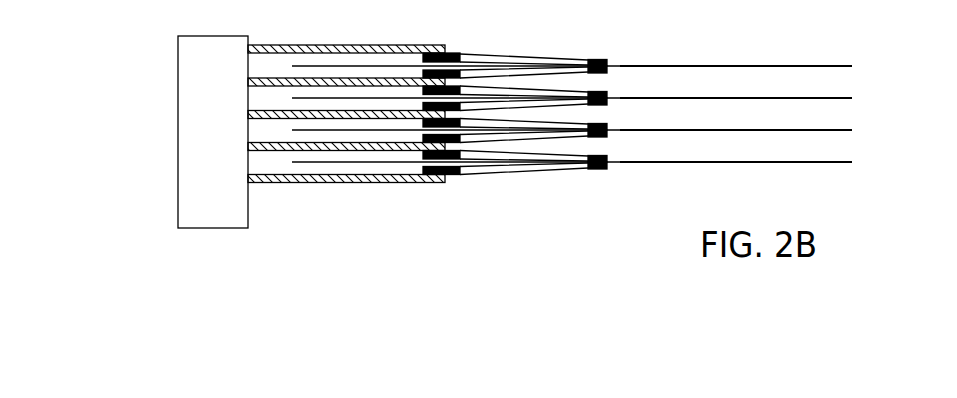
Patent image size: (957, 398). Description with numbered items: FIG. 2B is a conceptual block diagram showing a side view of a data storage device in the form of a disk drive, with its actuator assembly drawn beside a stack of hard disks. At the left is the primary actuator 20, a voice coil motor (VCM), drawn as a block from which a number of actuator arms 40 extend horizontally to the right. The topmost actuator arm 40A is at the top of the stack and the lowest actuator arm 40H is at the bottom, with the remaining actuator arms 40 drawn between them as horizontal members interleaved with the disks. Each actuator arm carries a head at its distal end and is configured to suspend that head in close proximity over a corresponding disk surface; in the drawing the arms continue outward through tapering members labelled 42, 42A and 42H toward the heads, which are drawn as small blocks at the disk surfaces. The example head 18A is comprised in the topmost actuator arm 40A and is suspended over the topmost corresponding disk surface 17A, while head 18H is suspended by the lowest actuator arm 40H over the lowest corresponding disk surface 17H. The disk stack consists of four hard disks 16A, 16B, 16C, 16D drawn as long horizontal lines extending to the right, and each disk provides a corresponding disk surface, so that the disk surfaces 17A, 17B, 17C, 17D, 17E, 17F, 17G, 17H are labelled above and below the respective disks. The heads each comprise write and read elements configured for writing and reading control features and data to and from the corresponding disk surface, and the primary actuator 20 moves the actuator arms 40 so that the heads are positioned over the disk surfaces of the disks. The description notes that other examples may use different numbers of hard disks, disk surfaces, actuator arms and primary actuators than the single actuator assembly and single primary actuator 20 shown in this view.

The primary actuator 20 is at (178, 74).
The actuator arms 40 is at (346, 134).
The topmost actuator arm 40A is at (367, 45).
The lowest actuator arm 40H is at (313, 183).
The suspensions 42 is at (520, 135).
The suspension A 42A is at (546, 36).
The suspension H 42H is at (542, 185).
The head 18A is at (614, 53).
The head 18H is at (614, 176).
The hard disk 16A is at (860, 66).
The hard disk 16B is at (860, 98).
The hard disk 16C is at (860, 130).
The hard disk 16D is at (860, 162).
The topmost disk surface 17A is at (764, 66).
The disk surface 17B is at (748, 66).
The disk surface 17C is at (764, 98).
The disk surface 17D is at (748, 98).
The disk surface 17E is at (751, 130).
The disk surface 17F is at (735, 130).
The disk surface 17G is at (750, 162).
The lowest disk surface 17H is at (734, 162).